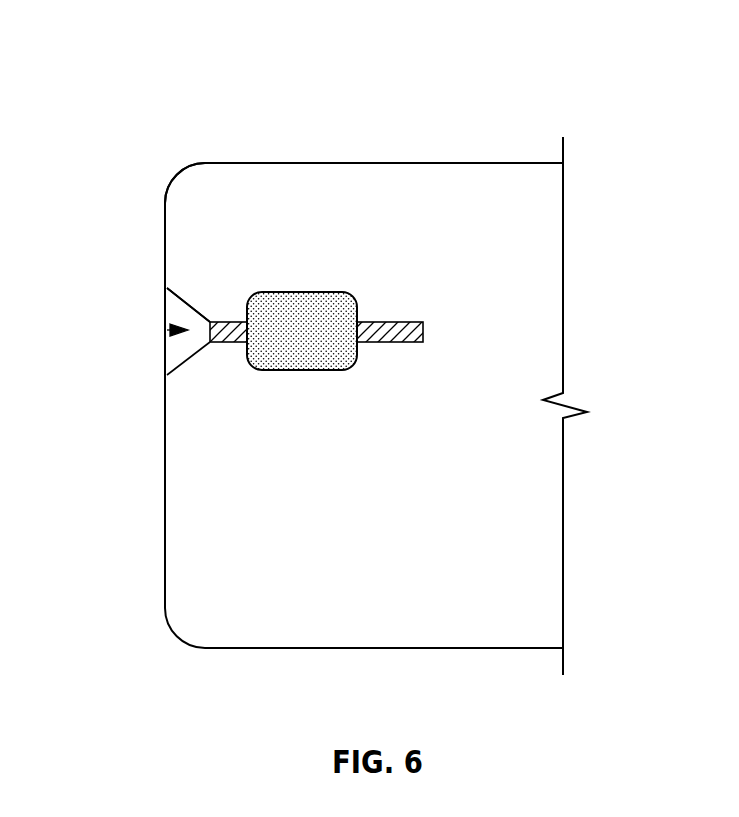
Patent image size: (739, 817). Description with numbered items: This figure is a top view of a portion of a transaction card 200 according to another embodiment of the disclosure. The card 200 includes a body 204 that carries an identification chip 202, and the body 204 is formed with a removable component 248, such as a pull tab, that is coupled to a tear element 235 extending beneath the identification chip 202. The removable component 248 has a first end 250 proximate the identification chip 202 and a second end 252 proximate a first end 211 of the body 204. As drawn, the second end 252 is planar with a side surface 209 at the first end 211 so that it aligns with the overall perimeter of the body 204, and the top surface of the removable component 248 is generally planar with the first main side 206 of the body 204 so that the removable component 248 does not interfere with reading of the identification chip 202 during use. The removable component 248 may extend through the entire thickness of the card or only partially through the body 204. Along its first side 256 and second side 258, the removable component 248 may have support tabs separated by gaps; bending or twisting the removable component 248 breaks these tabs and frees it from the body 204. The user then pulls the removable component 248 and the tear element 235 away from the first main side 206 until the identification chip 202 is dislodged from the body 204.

The card 200 is at (147, 50).
The identification chip 202 is at (312, 307).
The body 204 is at (462, 172).
The first main side 206 is at (255, 622).
The side surface 209 is at (165, 512).
The first end 211 is at (178, 217).
The tear element 235 is at (400, 328).
The removable component 248 is at (167, 332).
The first end 250 is at (203, 335).
The second end 252 is at (175, 308).
The first side 256 is at (192, 307).
The second side 258 is at (177, 370).